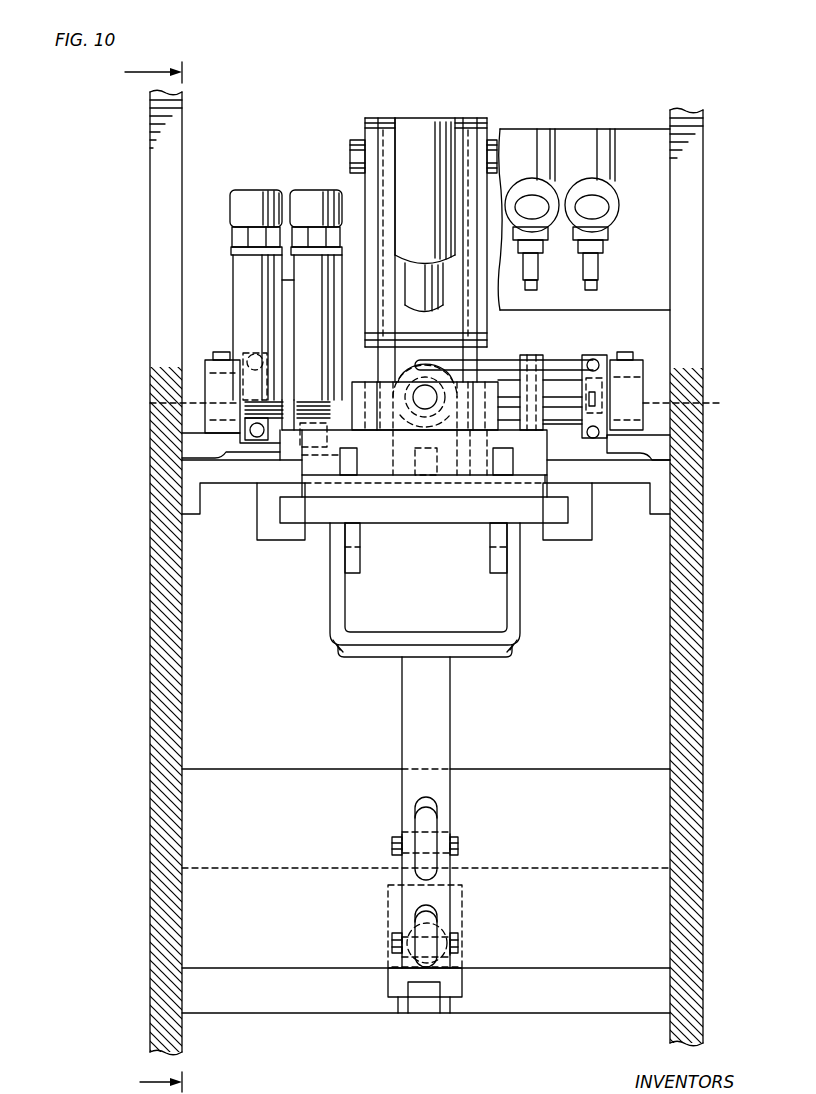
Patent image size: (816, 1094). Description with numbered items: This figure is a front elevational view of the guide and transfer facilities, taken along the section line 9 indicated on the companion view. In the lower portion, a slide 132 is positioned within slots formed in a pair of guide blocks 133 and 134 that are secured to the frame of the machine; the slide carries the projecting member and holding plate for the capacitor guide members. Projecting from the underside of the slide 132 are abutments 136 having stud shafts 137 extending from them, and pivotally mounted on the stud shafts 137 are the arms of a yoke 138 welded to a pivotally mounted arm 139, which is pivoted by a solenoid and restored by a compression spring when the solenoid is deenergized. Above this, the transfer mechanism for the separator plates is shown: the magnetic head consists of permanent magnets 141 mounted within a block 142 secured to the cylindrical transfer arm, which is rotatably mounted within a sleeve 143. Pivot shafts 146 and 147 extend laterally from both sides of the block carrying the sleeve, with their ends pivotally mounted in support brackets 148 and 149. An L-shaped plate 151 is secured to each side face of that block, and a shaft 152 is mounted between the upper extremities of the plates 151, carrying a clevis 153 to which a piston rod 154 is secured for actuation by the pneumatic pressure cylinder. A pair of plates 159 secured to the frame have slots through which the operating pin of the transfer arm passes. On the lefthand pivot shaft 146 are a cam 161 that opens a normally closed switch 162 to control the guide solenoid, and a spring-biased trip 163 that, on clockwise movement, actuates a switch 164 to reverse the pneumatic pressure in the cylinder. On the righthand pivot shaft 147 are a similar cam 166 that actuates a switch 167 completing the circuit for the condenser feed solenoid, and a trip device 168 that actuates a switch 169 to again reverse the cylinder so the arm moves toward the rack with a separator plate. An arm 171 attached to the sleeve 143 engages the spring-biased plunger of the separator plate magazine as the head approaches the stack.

The section line 9- 9 is at (151, 577).
The slide 132 is at (403, 507).
The guide block 133 is at (273, 535).
The guide block 134 is at (593, 527).
The abutments 136 is at (490, 542).
The stud shafts 137 is at (333, 570).
The yoke 138 is at (463, 640).
The pivotally mounted arm 139 is at (437, 740).
The permanent magnets 141 is at (470, 463).
The block 142 is at (543, 448).
The sleeve 143 is at (405, 372).
The pivot shaft 146 is at (177, 402).
The pivot shaft 147 is at (699, 402).
The support bracket 148 is at (205, 375).
The support bracket 149 is at (638, 372).
The L-shaped plate 151 is at (370, 328).
The shaft 152 is at (362, 152).
The clevis 153 is at (412, 137).
The piston rod 154 is at (413, 272).
The plates 159 is at (385, 184).
The cam 161 is at (317, 432).
The switch 162 is at (300, 308).
The spring-biased trip 163 is at (250, 410).
The switch 164 is at (255, 262).
The cam 166 is at (543, 357).
The switch 167 is at (530, 138).
The trip device 168 is at (597, 357).
The switch 169 is at (592, 135).
The arm 171 is at (508, 363).